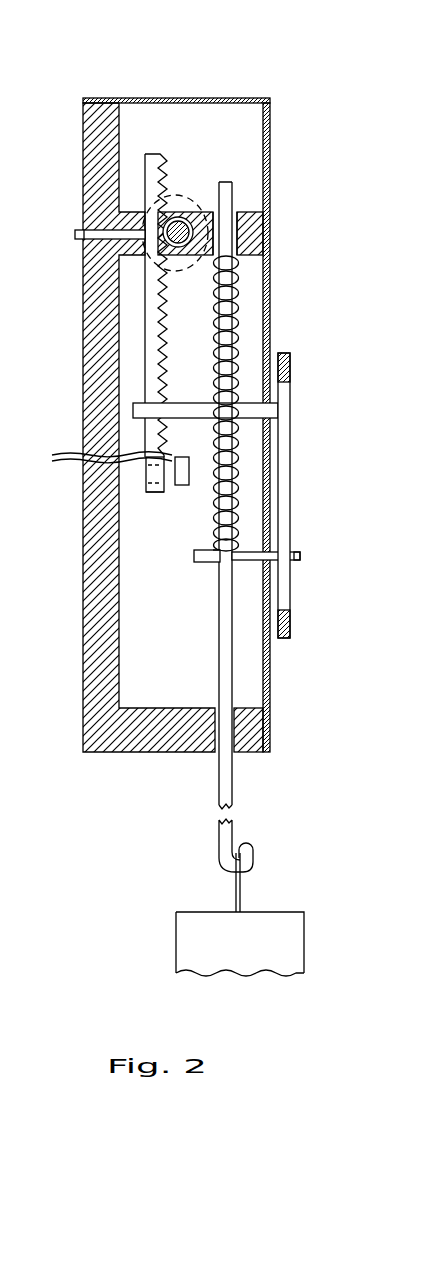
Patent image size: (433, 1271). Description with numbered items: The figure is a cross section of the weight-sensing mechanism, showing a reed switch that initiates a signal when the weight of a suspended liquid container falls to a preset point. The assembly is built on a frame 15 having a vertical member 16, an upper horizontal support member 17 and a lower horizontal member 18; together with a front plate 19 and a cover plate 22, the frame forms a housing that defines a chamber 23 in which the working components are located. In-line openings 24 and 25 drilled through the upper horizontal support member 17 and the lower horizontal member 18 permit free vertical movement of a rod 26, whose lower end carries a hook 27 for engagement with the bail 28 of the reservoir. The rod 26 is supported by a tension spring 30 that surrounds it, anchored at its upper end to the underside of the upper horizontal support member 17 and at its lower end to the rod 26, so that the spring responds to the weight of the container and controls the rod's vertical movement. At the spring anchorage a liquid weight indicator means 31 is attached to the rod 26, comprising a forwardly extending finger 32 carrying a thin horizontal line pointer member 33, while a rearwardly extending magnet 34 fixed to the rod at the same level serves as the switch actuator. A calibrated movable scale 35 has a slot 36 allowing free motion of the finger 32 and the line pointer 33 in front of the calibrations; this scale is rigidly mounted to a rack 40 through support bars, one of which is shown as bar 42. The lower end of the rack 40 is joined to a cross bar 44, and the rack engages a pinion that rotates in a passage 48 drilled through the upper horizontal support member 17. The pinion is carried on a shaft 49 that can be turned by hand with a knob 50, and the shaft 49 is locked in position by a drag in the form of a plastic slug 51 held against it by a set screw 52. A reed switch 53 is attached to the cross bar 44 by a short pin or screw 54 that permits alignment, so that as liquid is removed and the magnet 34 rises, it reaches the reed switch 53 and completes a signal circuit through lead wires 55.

The frame 15 is at (171, 408).
The vertical member 16 is at (92, 490).
The upper horizontal support member 17 is at (266, 236).
The lower horizontal member 18 is at (265, 745).
The front plate 19 is at (268, 144).
The cover plate 22 is at (183, 97).
The chamber 23 is at (180, 627).
The opening 24 is at (238, 233).
The opening 25 is at (236, 720).
The rod 26 is at (225, 665).
The hook 27 is at (250, 858).
The bail 28 is at (234, 888).
The tension spring 30 is at (238, 291).
The liquid weight indicator means 31 is at (213, 549).
The finger 32 is at (291, 550).
The line pointer member 33 is at (289, 535).
The magnet 34 is at (194, 556).
The calibrated movable scale 35 is at (290, 376).
The slot 36 is at (309, 495).
The rack 40 is at (93, 357).
The support bar 42 is at (178, 410).
The cross bar 44 is at (146, 484).
The passage 48 is at (187, 224).
The shaft 49 is at (197, 192).
The knob 50 is at (148, 196).
The plastic slug 51 is at (84, 236).
The set screw 52 is at (80, 236).
The reed switch 53 is at (181, 486).
The pin or screw 54 is at (153, 492).
The lead wires 55 is at (72, 452).